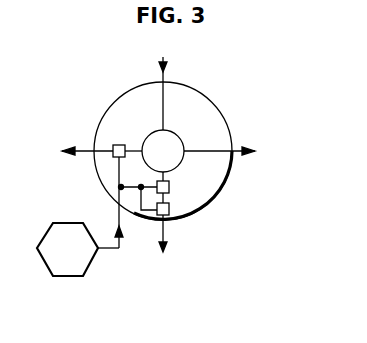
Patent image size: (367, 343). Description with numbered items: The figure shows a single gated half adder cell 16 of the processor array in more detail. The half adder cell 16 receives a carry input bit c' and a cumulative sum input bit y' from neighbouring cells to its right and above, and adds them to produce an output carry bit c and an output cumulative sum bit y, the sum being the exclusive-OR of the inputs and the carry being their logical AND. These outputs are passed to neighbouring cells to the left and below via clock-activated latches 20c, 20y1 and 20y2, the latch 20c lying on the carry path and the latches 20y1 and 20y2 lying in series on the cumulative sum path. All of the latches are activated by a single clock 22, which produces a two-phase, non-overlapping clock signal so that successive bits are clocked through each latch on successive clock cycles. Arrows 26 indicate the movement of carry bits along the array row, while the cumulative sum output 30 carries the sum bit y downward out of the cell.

The half adder cell 16 is at (213, 98).
The clock-activated latch 20c is at (117, 146).
The clock-activated latch 20y1 is at (169, 188).
The clock-activated latch 20y2 is at (169, 210).
The clock 22 is at (46, 236).
The arrow 26 is at (64, 150).
The cumulative sum output 30 is at (159, 68).